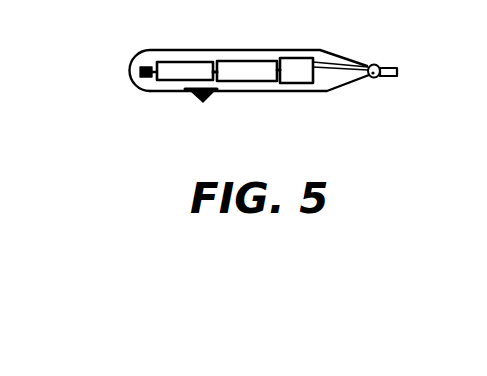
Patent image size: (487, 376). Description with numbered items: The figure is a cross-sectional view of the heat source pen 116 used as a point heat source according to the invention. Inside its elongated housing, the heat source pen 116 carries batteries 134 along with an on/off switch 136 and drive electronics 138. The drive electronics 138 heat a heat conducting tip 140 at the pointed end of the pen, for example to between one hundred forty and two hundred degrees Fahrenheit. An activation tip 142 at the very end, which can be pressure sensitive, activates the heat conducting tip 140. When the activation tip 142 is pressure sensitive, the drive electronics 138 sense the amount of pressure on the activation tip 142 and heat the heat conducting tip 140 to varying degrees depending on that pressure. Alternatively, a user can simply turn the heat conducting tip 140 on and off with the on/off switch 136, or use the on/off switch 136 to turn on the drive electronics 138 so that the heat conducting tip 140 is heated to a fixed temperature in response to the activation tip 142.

The heat source pen 116 is at (263, 50).
The batteries 134 is at (113, 130).
The on/off switch 136 is at (203, 98).
The drive electronics 138 is at (297, 83).
The heat conducting tip 140 is at (380, 65).
The activation tip 142 is at (397, 76).